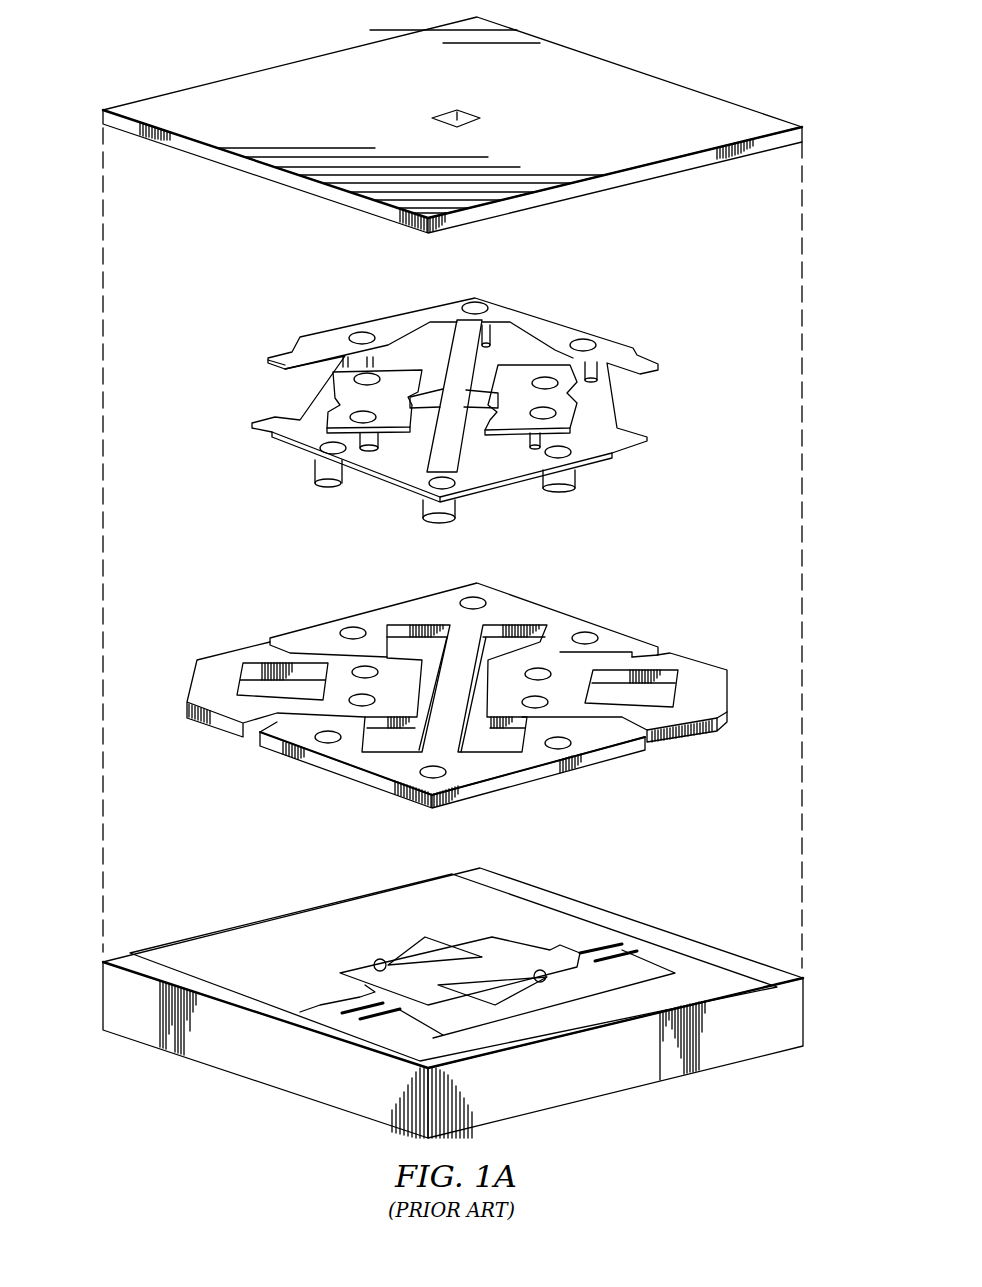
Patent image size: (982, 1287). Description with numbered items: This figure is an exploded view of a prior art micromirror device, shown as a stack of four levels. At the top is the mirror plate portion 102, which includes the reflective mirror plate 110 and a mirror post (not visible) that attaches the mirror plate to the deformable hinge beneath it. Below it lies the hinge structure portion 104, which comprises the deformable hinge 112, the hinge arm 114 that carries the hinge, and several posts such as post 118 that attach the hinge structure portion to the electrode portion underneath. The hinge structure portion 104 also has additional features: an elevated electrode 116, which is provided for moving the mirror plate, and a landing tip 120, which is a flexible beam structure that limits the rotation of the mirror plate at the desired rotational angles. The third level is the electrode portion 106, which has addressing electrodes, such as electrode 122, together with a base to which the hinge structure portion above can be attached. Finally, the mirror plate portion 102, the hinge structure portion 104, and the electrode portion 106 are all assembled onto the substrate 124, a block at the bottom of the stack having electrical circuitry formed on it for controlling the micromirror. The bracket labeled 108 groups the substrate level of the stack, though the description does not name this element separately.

The mirror plate portion 102 is at (84, 18).
The hinge structure portion 104 is at (237, 300).
The electrode portion 106 is at (171, 585).
The base substrate block 108 is at (82, 867).
The reflective mirror plate 110 is at (635, 77).
The deformable hinge 112 is at (457, 372).
The hinge arm 114 is at (410, 318).
The elevated electrode 116 is at (333, 413).
The post 118 is at (317, 472).
The landing tip 120 is at (632, 430).
The electrode 122 is at (230, 660).
The substrate 124 is at (278, 930).